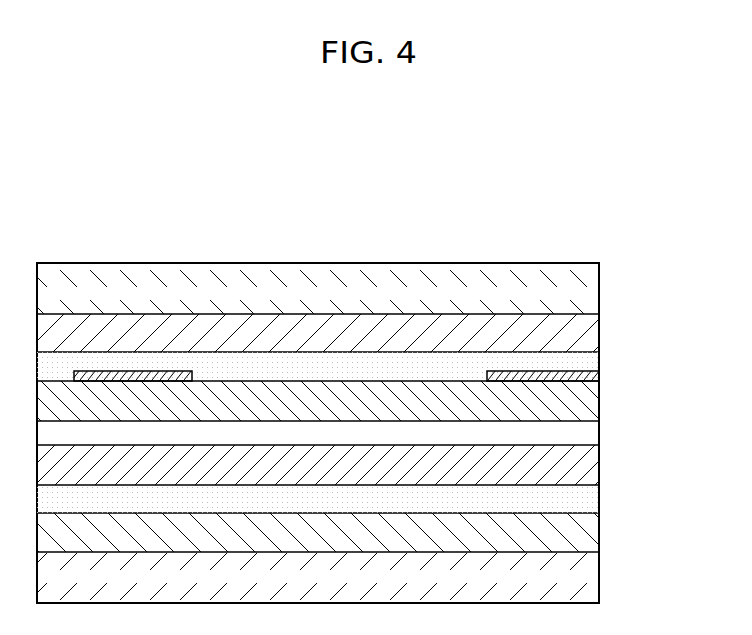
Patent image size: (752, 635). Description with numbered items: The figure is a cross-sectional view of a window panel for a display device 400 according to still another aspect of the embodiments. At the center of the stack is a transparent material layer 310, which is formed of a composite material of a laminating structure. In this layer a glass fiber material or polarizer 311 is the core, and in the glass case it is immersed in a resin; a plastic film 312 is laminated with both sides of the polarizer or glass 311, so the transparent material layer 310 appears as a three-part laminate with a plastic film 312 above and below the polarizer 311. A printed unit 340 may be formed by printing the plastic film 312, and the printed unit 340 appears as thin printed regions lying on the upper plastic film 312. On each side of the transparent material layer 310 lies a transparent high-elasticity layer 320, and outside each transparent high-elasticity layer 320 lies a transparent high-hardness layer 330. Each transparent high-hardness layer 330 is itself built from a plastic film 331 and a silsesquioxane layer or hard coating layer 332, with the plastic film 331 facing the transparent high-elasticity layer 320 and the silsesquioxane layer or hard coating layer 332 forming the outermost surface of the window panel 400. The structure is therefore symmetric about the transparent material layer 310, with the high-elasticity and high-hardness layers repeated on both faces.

The window panel for a display device 400 is at (334, 213).
The transparent high-hardness layer 330 is at (374, 431).
The silsesquioxane layer or hard coating layer 332 is at (583, 278).
The plastic film 331 is at (585, 315).
The transparent high-elasticity layer 320 is at (585, 357).
The printed unit 340 is at (593, 375).
The transparent material layer 310 is at (374, 433).
The plastic film 312 is at (577, 400).
The polarizer or glass 311 is at (583, 435).